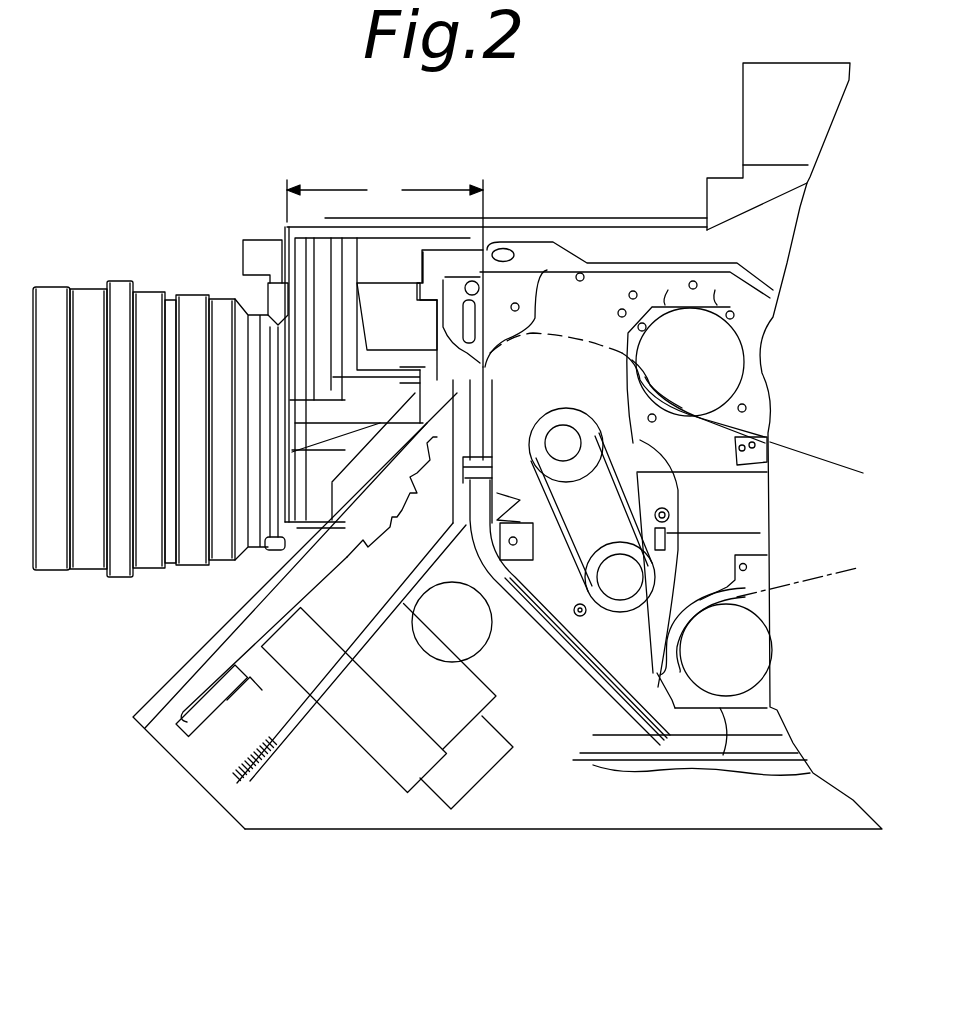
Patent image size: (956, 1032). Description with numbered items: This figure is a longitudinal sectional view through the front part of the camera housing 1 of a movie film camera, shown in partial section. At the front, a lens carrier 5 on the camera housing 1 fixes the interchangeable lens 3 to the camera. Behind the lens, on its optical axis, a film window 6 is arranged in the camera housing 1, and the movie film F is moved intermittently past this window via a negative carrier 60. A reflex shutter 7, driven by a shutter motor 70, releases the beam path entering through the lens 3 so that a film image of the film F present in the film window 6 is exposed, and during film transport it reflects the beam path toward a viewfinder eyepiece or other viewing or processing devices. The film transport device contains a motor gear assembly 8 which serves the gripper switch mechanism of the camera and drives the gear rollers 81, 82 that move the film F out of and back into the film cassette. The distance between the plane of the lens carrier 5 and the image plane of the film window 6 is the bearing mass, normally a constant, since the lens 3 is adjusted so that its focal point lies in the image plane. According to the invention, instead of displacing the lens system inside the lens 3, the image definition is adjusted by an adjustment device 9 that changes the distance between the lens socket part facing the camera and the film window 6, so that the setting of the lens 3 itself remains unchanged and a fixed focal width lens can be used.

The camera housing 1 is at (753, 807).
The interchangeable lens 3 is at (142, 300).
The lens carrier 5 is at (255, 255).
The film window 6 is at (523, 404).
The reflex shutter 7 is at (182, 712).
The motor gear assembly 8 is at (627, 570).
The adjustment device 9 is at (383, 307).
The negative carrier 60 is at (487, 367).
The shutter motor 70 is at (410, 765).
The gear roller 81 is at (720, 343).
The gear roller 82 is at (740, 653).
The movie film F is at (848, 465).